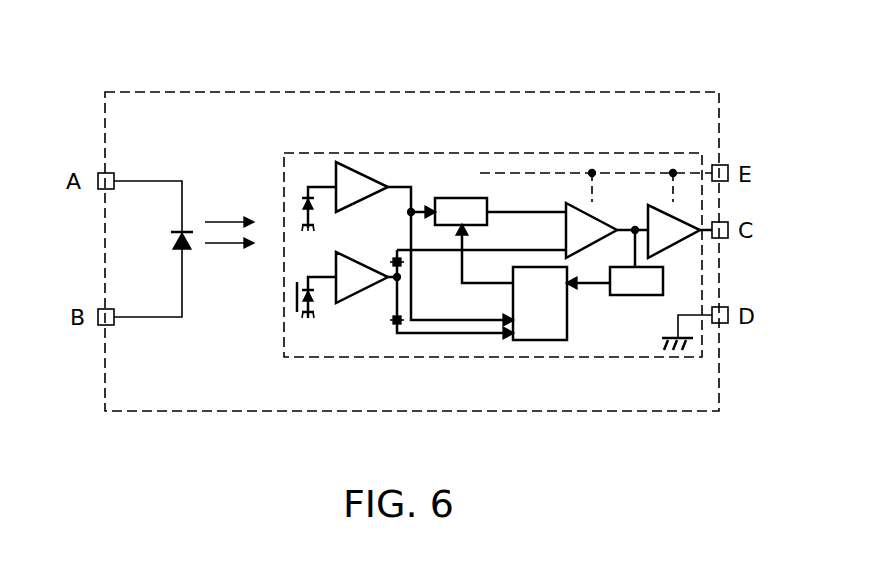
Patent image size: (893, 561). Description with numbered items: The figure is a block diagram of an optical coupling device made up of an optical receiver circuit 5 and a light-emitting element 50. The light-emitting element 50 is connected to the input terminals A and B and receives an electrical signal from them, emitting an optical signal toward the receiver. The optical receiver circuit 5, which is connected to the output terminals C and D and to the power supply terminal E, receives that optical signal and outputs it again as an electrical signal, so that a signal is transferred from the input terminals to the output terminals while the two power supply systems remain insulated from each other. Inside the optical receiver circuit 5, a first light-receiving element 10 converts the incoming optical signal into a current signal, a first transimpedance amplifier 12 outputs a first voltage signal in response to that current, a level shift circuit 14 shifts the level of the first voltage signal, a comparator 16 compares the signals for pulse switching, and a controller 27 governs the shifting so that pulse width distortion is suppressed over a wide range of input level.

The optical receiver circuit 5 is at (505, 153).
The first light-receiving element 10 is at (298, 214).
The first transimpedance amplifier 12 is at (357, 170).
The level shift circuit 14 is at (462, 205).
The comparator 16 is at (593, 233).
The controller 27 is at (543, 340).
The light-emitting element 50 is at (165, 236).